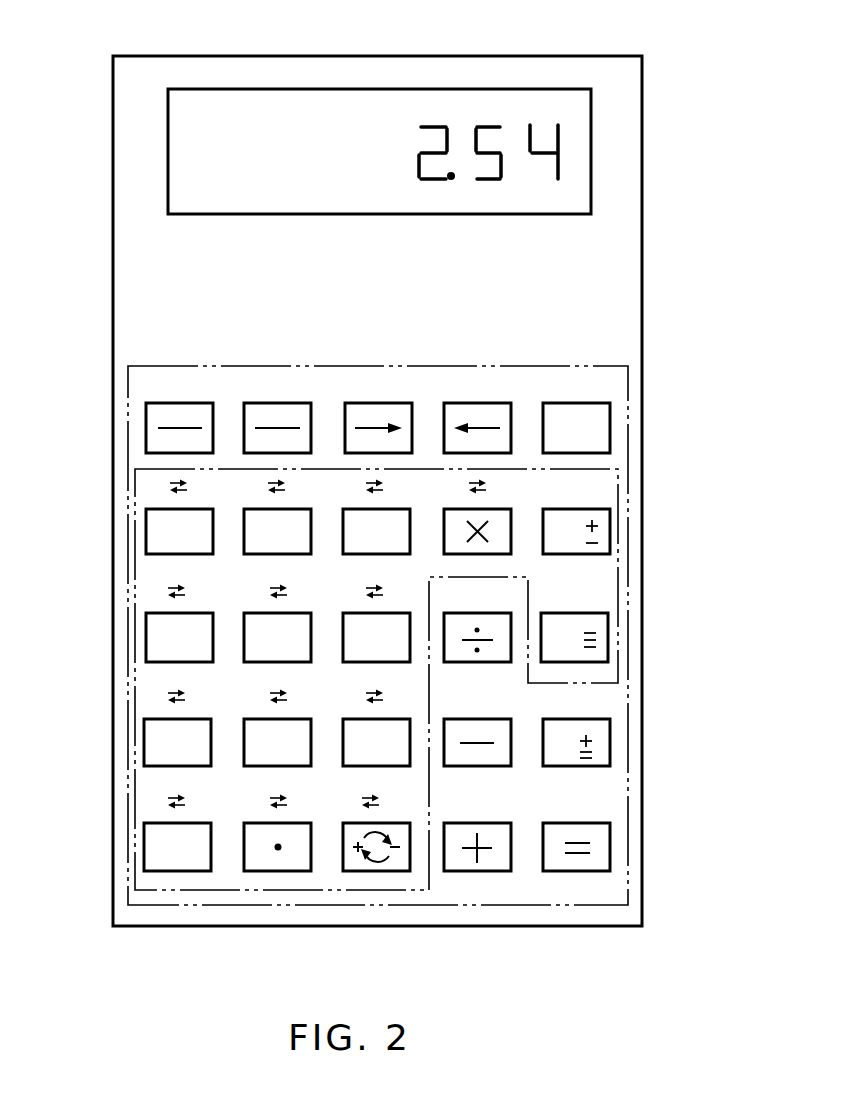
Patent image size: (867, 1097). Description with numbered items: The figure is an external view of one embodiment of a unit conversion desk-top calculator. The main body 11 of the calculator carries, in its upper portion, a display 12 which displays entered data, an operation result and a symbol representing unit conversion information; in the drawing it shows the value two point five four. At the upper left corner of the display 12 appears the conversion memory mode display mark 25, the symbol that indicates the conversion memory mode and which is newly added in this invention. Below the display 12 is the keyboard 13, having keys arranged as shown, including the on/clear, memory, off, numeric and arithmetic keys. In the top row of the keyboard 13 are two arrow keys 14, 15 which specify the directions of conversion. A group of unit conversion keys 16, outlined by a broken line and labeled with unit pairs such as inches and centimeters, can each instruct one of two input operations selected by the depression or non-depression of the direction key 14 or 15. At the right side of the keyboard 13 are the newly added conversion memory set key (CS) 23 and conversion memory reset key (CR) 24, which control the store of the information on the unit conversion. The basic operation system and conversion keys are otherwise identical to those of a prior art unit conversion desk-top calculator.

The main body 11 is at (618, 324).
The display 12 is at (562, 108).
The keyboard 13 is at (419, 651).
The conversion direction key 14 is at (386, 403).
The conversion direction key 15 is at (472, 403).
The conversion key 16 is at (329, 880).
The conversion memory set key 23 is at (597, 500).
The conversion memory reset key 24 is at (605, 612).
The conversion memory mode display mark 25 is at (221, 104).